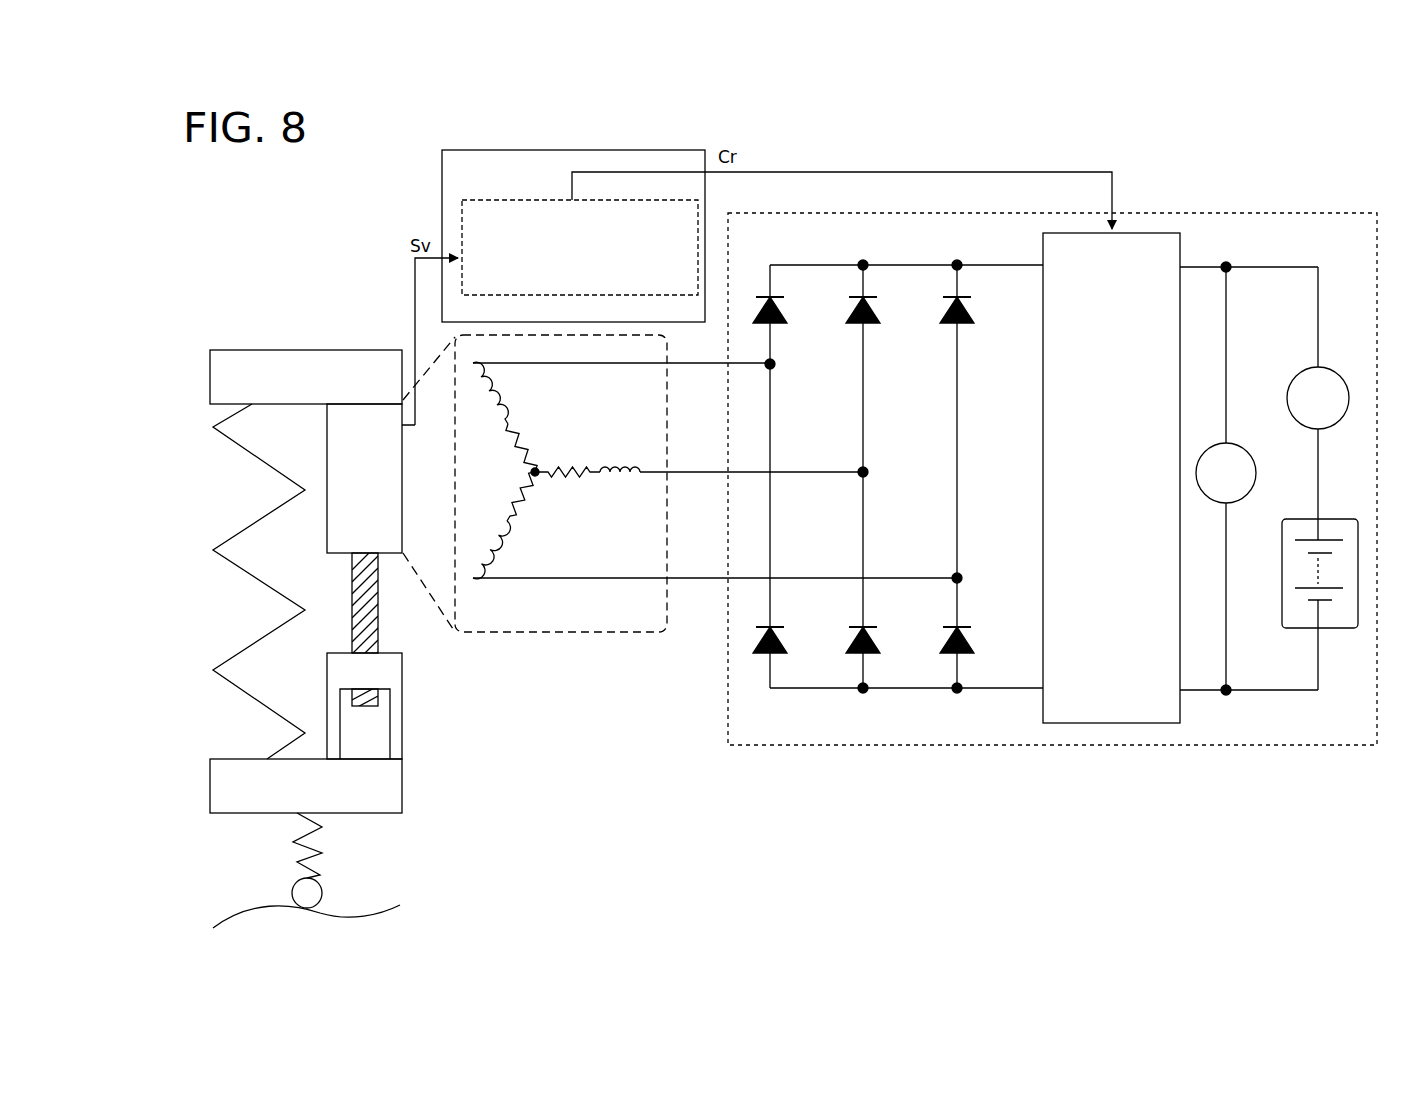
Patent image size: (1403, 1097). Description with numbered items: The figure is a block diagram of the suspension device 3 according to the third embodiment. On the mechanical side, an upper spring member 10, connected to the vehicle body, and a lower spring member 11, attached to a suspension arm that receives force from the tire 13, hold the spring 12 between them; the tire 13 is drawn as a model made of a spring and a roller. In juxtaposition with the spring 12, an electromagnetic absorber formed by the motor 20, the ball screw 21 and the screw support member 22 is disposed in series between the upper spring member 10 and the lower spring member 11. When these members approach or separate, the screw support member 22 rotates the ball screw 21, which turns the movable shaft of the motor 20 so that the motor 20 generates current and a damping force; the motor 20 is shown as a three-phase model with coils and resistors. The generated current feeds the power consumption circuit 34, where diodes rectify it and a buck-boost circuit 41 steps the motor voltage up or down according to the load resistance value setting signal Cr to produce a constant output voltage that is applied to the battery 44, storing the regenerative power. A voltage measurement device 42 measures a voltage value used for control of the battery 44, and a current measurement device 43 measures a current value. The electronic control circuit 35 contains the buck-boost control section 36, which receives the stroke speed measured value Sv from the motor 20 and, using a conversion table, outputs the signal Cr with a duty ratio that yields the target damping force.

The suspension device 3 is at (886, 137).
The upper spring member 10 is at (303, 350).
The lower spring member 11 is at (347, 815).
The spring 12 is at (232, 538).
The tire 13 is at (298, 858).
The motor 20 is at (325, 507).
The ball screw 21 is at (378, 612).
The screw support member 22 is at (403, 678).
The power consumption circuit 34 is at (1163, 213).
The electronic control circuit 35 is at (573, 214).
The buck-boost control section 36 is at (497, 200).
The buck-boost circuit 41 is at (1182, 250).
The voltage measurement device 42 is at (1235, 443).
The current measurement device 43 is at (1327, 367).
The battery 44 is at (1337, 515).